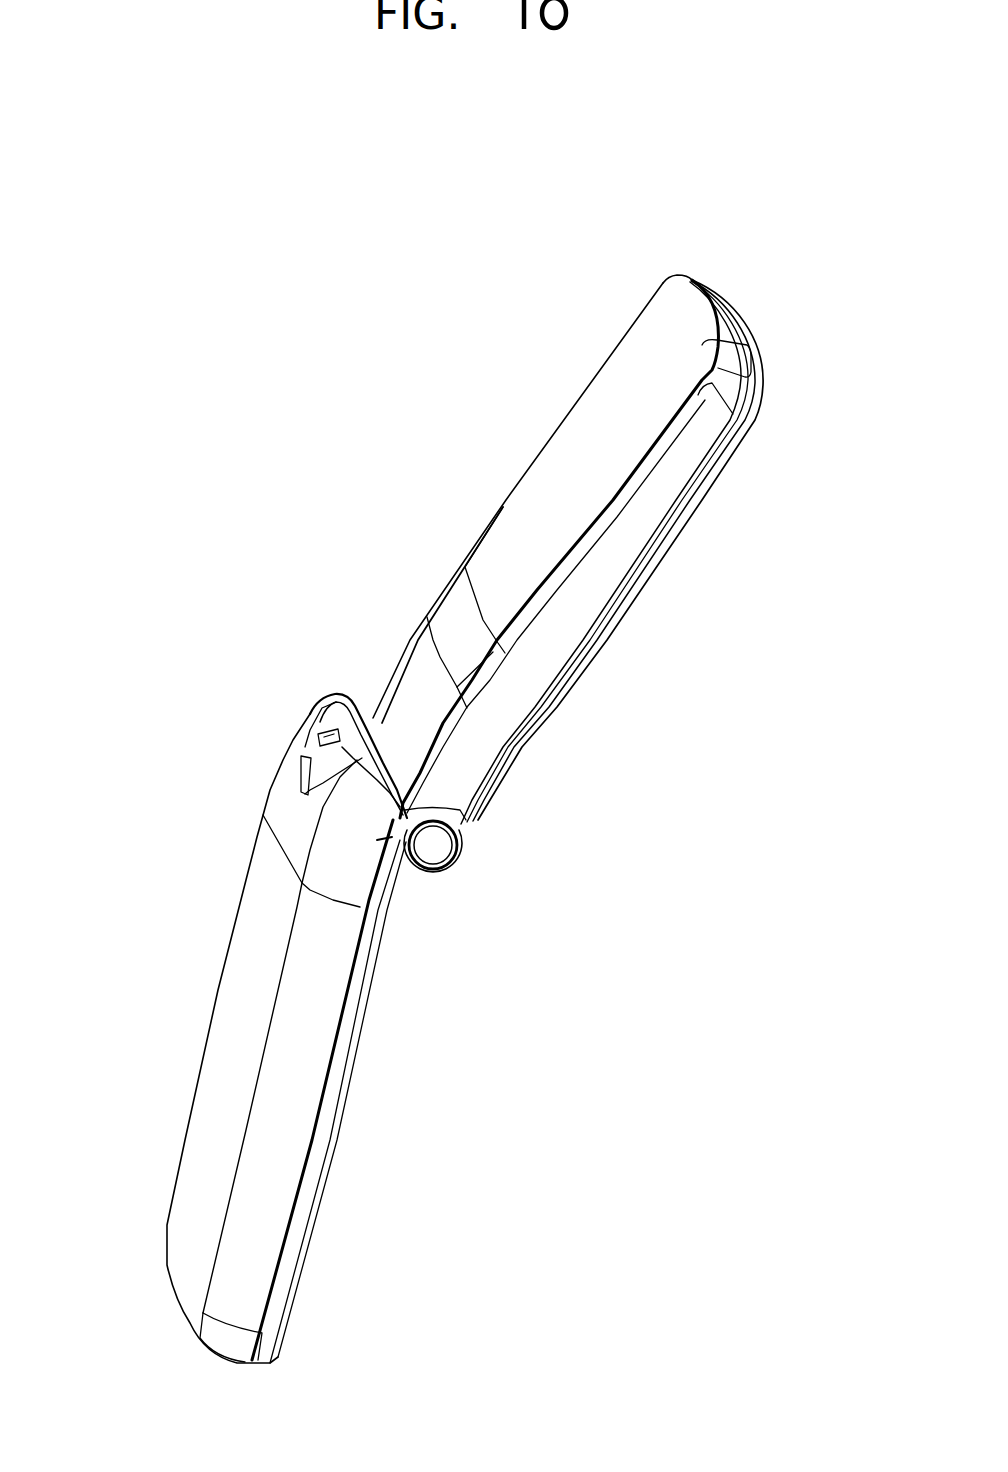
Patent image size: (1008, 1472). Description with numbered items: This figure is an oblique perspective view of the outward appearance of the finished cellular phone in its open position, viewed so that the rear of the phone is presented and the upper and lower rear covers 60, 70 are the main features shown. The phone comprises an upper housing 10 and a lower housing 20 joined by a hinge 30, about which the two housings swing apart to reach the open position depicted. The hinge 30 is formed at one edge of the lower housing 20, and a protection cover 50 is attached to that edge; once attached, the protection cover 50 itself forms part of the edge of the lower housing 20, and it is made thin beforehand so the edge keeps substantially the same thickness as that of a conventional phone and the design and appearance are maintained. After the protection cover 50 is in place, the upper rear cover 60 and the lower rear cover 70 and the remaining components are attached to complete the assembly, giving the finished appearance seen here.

The upper housing 10 is at (738, 445).
The lower housing 20 is at (328, 1112).
The hinge 30 is at (437, 852).
The protection cover 50 is at (405, 800).
The upper rear cover 60 is at (630, 372).
The lower rear cover 70 is at (223, 1085).